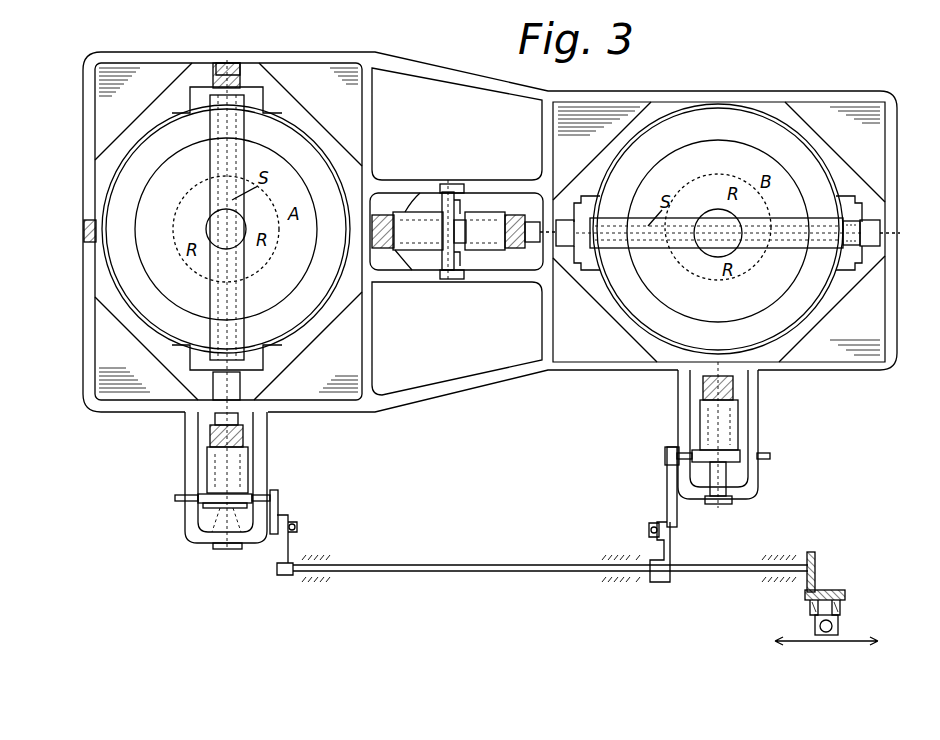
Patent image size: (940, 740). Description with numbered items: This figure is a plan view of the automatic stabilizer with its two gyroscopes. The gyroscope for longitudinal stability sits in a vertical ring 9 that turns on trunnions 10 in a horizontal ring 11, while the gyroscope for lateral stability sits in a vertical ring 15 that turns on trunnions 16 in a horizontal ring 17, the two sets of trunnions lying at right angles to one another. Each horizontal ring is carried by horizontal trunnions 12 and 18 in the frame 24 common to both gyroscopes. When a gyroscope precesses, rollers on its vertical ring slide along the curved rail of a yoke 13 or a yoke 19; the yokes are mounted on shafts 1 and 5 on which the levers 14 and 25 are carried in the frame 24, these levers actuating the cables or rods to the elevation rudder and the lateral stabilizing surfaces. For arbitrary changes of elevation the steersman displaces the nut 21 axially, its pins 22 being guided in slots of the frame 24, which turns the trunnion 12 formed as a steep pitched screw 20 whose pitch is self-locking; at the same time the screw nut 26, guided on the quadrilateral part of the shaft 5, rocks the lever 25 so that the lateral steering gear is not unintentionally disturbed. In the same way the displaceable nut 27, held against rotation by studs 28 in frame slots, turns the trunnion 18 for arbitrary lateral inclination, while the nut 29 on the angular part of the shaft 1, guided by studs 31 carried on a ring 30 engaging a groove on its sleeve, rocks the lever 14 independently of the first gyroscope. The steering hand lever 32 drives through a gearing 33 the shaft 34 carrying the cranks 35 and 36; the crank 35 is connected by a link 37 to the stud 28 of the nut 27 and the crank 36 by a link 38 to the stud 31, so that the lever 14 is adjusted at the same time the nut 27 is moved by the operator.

The shaft 1 is at (228, 60).
The shaft 5 is at (544, 226).
The vertical ring 9 is at (240, 140).
The trunnions 10 is at (276, 370).
The horizontal ring 11 is at (310, 135).
The trunnion 12 is at (68, 250).
The yoke 13 is at (242, 75).
The lever 14 is at (240, 420).
The vertical ring 15 is at (790, 246).
The trunnions 16 is at (565, 220).
The horizontal ring 17 is at (795, 385).
The trunnion 18 is at (730, 92).
The yoke 19 is at (862, 256).
The steep pitched screw 20 is at (390, 252).
The nut 21 is at (447, 188).
The pins 22 is at (456, 185).
The frame 24 is at (408, 188).
The lever 25 is at (515, 252).
The screw nut 26 is at (492, 210).
The displaceable nut 27 is at (736, 430).
The studs 28 is at (668, 457).
The nut 29 is at (240, 466).
The ring 30 is at (206, 488).
The guide studs 31 is at (180, 501).
The steering hand lever 32 is at (826, 633).
The gearing 33 is at (816, 584).
The shaft 34 is at (516, 567).
The crank 35 is at (666, 555).
The crank 36 is at (292, 552).
The lever 37 is at (667, 500).
The link 38 is at (280, 512).